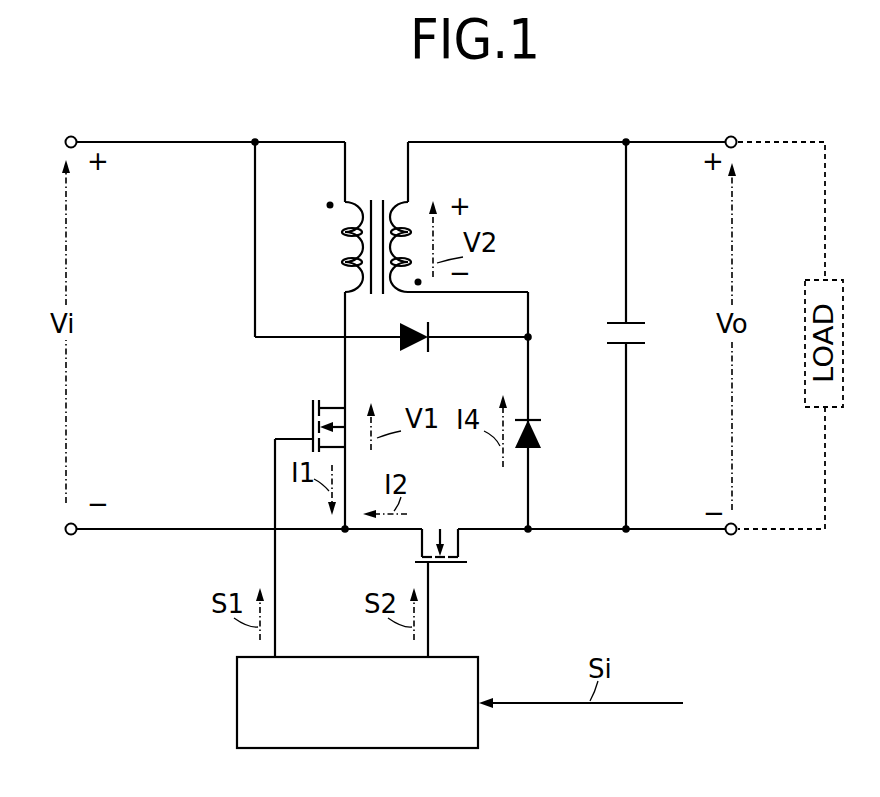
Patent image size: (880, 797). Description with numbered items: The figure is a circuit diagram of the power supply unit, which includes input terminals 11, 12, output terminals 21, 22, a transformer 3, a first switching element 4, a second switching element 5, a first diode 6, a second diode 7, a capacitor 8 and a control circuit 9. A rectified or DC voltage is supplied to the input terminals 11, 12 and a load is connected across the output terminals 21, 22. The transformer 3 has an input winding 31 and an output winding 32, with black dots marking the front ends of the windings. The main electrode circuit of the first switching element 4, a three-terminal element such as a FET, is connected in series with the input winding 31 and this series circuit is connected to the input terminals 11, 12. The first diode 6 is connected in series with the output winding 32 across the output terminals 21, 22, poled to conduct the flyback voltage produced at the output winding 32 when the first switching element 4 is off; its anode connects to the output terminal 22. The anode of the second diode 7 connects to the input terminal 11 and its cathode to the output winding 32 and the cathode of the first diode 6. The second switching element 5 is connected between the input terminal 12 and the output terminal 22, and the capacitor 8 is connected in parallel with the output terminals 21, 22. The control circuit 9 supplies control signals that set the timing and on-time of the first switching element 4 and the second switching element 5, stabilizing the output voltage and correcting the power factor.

The transformer 3 is at (408, 199).
The first switching element 4 is at (312, 416).
The second switching element 5 is at (450, 566).
The first diode 6 is at (534, 422).
The second diode 7 is at (404, 348).
The capacitor 8 is at (612, 322).
The control circuit 9 is at (480, 678).
The input terminal 11 is at (64, 139).
The input terminal 12 is at (64, 526).
The output terminal 21 is at (738, 137).
The output terminal 22 is at (738, 524).
The input winding 31 is at (350, 233).
The output winding 32 is at (403, 205).